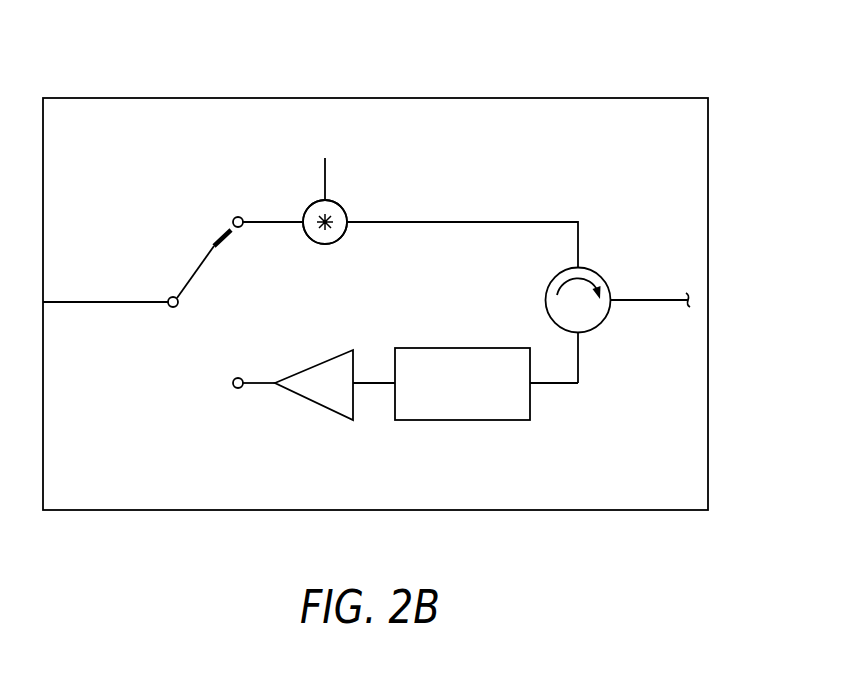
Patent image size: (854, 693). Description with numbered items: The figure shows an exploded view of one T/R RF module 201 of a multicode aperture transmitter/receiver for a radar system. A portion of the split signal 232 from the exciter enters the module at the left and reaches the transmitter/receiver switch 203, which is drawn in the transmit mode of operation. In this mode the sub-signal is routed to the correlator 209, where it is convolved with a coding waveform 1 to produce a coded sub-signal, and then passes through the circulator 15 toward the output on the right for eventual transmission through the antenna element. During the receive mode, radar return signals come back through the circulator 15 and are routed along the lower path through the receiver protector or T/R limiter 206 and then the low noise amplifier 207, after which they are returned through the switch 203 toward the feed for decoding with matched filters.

The T/R RF module 201 is at (375, 98).
The signal 232 is at (105, 302).
The transmitter/receiver (T/R) switch 203 is at (207, 265).
The correlator 209 is at (326, 244).
The mixer local oscillator input 1 is at (309, 206).
The circulator 15 is at (546, 300).
The low noise amplifier 207 is at (312, 400).
The T/R limiter 206 is at (460, 420).